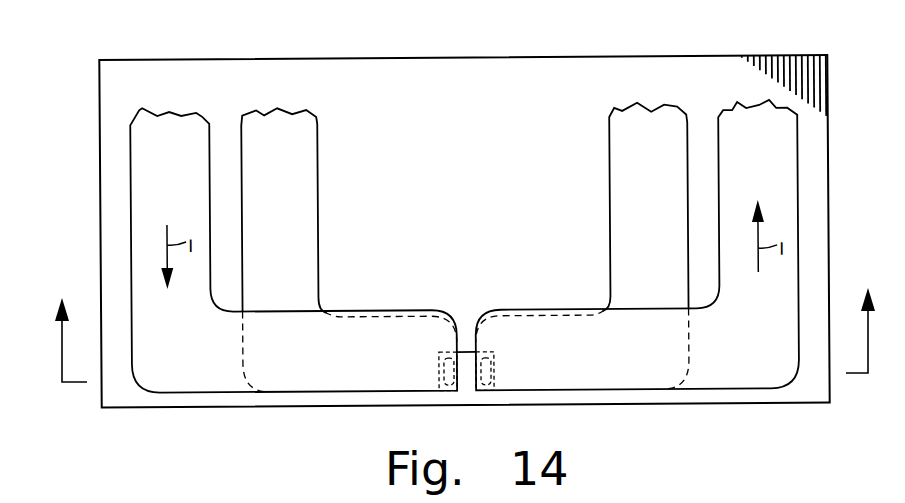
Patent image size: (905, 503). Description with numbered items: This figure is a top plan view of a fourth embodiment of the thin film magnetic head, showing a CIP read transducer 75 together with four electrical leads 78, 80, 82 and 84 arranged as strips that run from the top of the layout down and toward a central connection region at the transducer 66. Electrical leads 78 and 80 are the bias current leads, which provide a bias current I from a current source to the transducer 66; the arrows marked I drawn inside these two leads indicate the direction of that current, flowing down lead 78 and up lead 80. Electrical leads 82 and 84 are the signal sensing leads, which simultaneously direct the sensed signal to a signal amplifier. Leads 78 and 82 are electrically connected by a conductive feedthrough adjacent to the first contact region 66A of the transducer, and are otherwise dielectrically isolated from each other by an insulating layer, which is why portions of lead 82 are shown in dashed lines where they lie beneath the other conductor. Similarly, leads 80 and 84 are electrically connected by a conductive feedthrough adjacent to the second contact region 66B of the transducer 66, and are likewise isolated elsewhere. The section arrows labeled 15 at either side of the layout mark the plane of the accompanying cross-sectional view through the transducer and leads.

The CIP read transducer 75 is at (62, 78).
The electrical lead 78 is at (183, 184).
The electrical lead 82 is at (291, 190).
The electrical lead 84 is at (661, 195).
The electrical lead 80 is at (773, 174).
The transducer 66 is at (470, 407).
The first contact region 66A is at (438, 359).
The second contact region 66B is at (483, 369).
The section line 15- 15 is at (465, 315).